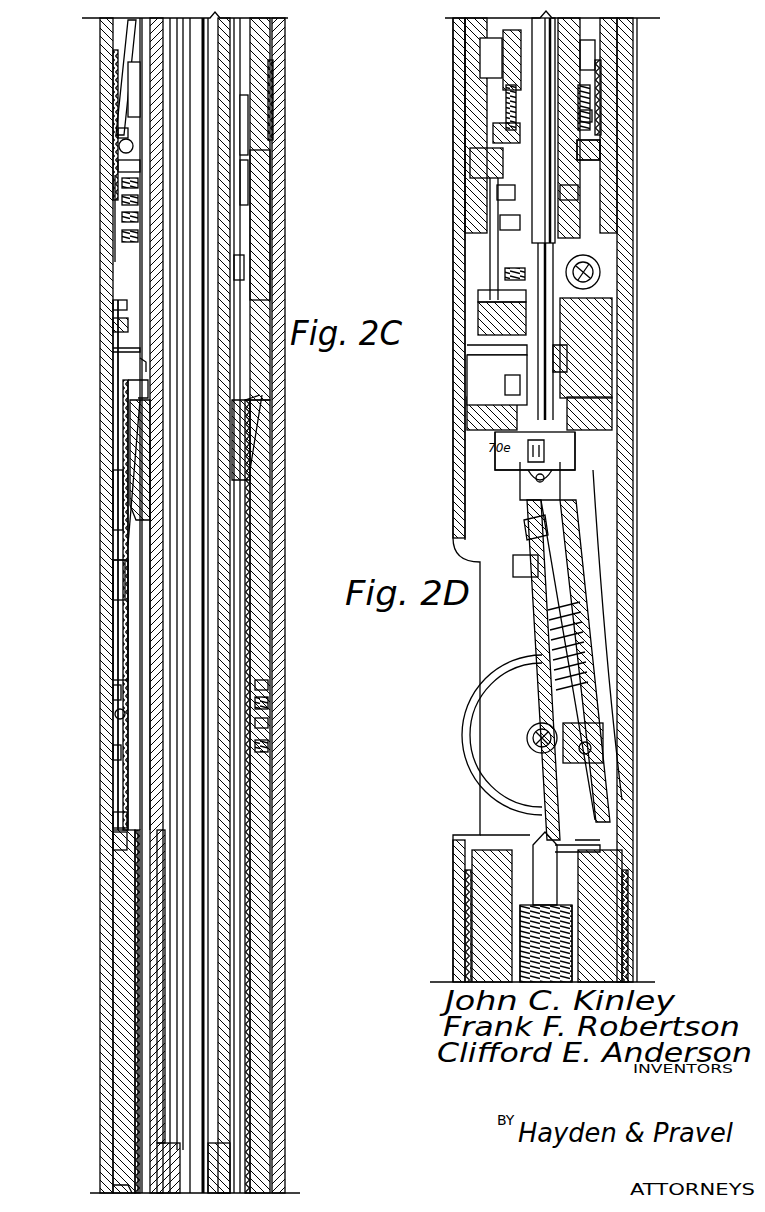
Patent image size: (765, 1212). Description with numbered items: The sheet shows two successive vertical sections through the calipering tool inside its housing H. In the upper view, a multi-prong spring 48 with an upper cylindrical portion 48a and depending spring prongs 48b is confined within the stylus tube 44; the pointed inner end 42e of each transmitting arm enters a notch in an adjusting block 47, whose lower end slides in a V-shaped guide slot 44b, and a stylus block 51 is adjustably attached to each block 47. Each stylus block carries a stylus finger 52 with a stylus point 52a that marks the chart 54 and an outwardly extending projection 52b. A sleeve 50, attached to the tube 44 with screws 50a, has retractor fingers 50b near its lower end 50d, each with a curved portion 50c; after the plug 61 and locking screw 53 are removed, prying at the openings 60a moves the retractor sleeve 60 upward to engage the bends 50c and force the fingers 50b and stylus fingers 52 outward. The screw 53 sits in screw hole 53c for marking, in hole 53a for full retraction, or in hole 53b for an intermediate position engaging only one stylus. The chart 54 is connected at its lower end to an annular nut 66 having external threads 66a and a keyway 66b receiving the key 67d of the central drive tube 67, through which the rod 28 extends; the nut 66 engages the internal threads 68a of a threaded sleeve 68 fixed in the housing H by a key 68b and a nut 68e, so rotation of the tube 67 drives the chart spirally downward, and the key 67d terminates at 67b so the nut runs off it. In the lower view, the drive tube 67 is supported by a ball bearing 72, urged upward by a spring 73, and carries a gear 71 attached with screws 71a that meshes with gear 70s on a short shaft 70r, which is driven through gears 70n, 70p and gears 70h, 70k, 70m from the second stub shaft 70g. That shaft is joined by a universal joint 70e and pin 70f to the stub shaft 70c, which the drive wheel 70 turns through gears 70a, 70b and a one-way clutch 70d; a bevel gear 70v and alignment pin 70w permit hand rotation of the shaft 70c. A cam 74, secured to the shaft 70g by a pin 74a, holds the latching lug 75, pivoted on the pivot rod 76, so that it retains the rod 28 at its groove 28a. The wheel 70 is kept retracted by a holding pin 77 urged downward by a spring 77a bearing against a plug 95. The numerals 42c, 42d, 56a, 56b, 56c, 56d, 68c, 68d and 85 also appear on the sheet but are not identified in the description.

In FIG. 2C, the housing H is at (100, 278).
In FIG. 2C, the latch dog 42c is at (118, 42).
In FIG. 2C, the upper cylindrical portion 48a is at (128, 62).
In FIG. 2C, the multi-prong spring 48 is at (132, 82).
In FIG. 2C, the spring prong 48b is at (136, 108).
In FIG. 2C, the pointed inner end 42e is at (125, 133).
In FIG. 2C, the latch head 42d is at (126, 146).
In FIG. 2C, the adjusting block 47 is at (120, 166).
In FIG. 2C, the spring section 56a is at (128, 184).
In FIG. 2C, the stylus block 51 is at (118, 200).
In FIG. 2C, the spring section 56b is at (128, 204).
In FIG. 2C, the spring section 56c is at (128, 222).
In FIG. 2C, the spring section 56d is at (128, 240).
In FIG. 2C, the stylus tube 44 is at (264, 226).
In FIG. 2C, the chart 54 is at (240, 270).
In FIG. 2C, the V-shaped guide slot 44b is at (118, 305).
In FIG. 2C, the screws 50a is at (118, 325).
In FIG. 2C, the stylus finger 52 is at (113, 349).
In FIG. 2C, the stylus point 52a is at (143, 368).
In FIG. 2C, the projection 52b is at (140, 390).
In FIG. 2C, the retractor finger 50b is at (135, 408).
In FIG. 2C, the sleeve 50 is at (116, 435).
In FIG. 2C, the keyway 66b is at (135, 470).
In FIG. 2C, the external threads 66a is at (240, 405).
In FIG. 2C, the annular nut 66 is at (242, 448).
In FIG. 2C, the curved portion 50c is at (118, 490).
In FIG. 2C, the key 67d is at (150, 513).
In FIG. 2C, the lower end 50d is at (120, 580).
In FIG. 2C, the rod 28 is at (185, 603).
In FIG. 2D, the rod 28 is at (555, 222).
In FIG. 2C, the retractor sleeve 60 is at (125, 622).
In FIG. 2C, the openings 60a is at (116, 692).
In FIG. 2C, the plug 61 is at (116, 714).
In FIG. 2C, the screw hole 53c is at (268, 686).
In FIG. 2C, the locking screw 53 is at (268, 703).
In FIG. 2C, the screw hole 53b is at (268, 725).
In FIG. 2C, the screw hole 53a is at (268, 748).
In FIG. 2C, the nut 68e is at (118, 820).
In FIG. 2C, the key 68b is at (118, 842).
In FIG. 2C, the central drive tube 67 is at (158, 965).
In FIG. 2D, the central drive tube 67 is at (598, 44).
In FIG. 2C, the internal threads 68a is at (136, 1012).
In FIG. 2C, the internally threaded sleeve 68 is at (125, 1040).
In FIG. 2C, the upper reduced diameter extension 67b is at (118, 1186).
In FIG. 2D, the body section 68c is at (485, 45).
In FIG. 2D, the body shoulder 68d is at (595, 78).
In FIG. 2D, the spring 73 is at (592, 103).
In FIG. 2D, the ball bearing 72 is at (592, 120).
In FIG. 2D, the gear 70s is at (480, 165).
In FIG. 2D, the gear 71 is at (598, 160).
In FIG. 2D, the screws 71a is at (580, 190).
In FIG. 2D, the short shaft 70r is at (500, 225).
In FIG. 2D, the gear 70h is at (595, 262).
In FIG. 2D, the gear 70k is at (594, 273).
In FIG. 2D, the gear 70m is at (505, 274).
In FIG. 2D, the gear 70p is at (492, 295).
In FIG. 2D, the gear 70n is at (485, 320).
In FIG. 2D, the pin 74a is at (500, 350).
In FIG. 2D, the cam 74 is at (600, 348).
In FIG. 2D, the pivot rod 76 is at (490, 370).
In FIG. 2D, the latching lug 75 is at (475, 376).
In FIG. 2D, the second stub shaft 70g is at (565, 362).
In FIG. 2D, the groove 28a is at (508, 388).
In FIG. 2D, the universal joint 70e is at (530, 462).
In FIG. 2D, the pin 70f is at (524, 500).
In FIG. 2D, the stub shaft 70c is at (590, 575).
In FIG. 2D, the bevel gear 70v is at (526, 535).
In FIG. 2D, the alignment pin 70w is at (528, 578).
In FIG. 2D, the one-way clutch 70d is at (585, 680).
In FIG. 2D, the wheel 85 is at (478, 808).
In FIG. 2D, the gear 70a is at (530, 725).
In FIG. 2D, the drive wheel 70 is at (538, 735).
In FIG. 2D, the gear 70b is at (605, 748).
In FIG. 2D, the holding pin 77 is at (533, 848).
In FIG. 2D, the plug 95 is at (578, 852).
In FIG. 2D, the spring 77a is at (590, 945).